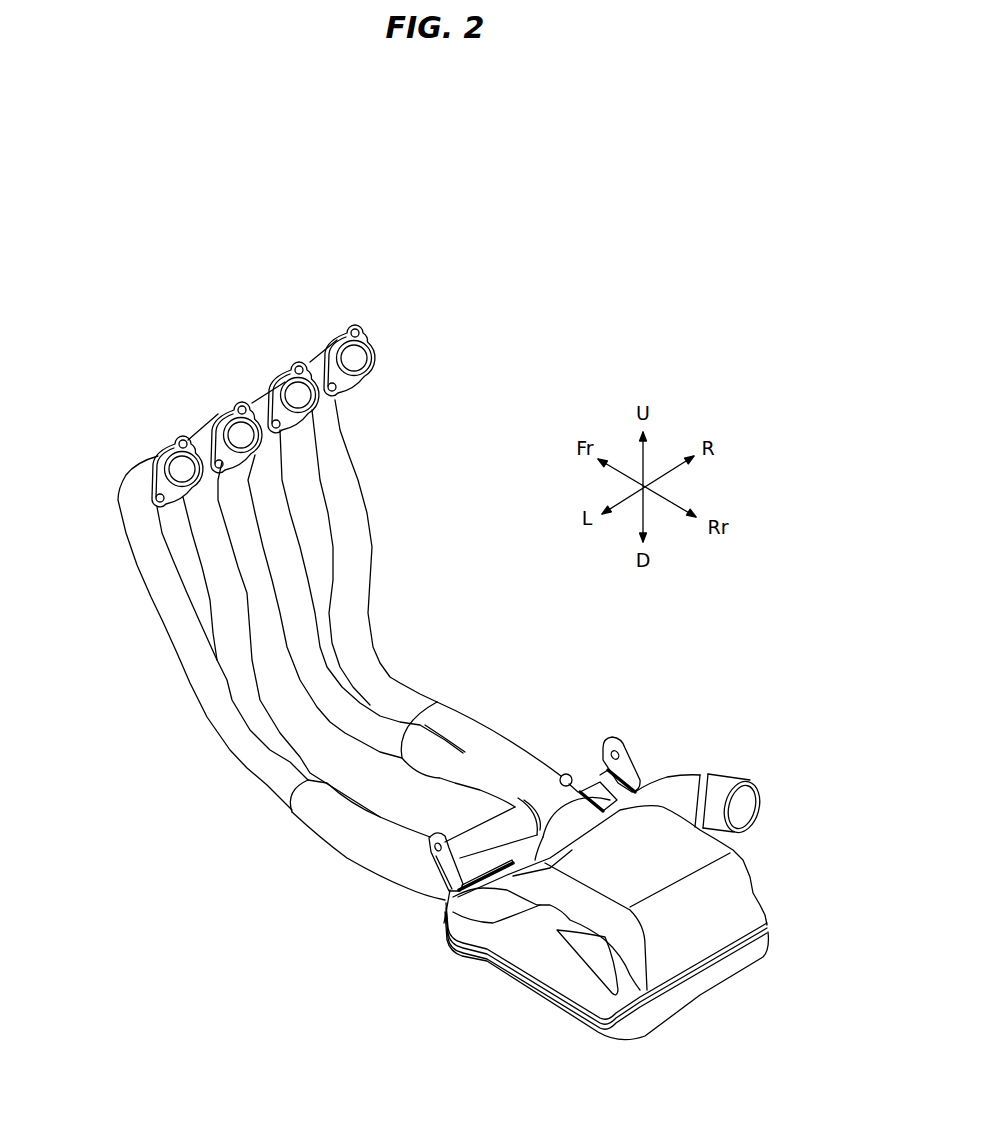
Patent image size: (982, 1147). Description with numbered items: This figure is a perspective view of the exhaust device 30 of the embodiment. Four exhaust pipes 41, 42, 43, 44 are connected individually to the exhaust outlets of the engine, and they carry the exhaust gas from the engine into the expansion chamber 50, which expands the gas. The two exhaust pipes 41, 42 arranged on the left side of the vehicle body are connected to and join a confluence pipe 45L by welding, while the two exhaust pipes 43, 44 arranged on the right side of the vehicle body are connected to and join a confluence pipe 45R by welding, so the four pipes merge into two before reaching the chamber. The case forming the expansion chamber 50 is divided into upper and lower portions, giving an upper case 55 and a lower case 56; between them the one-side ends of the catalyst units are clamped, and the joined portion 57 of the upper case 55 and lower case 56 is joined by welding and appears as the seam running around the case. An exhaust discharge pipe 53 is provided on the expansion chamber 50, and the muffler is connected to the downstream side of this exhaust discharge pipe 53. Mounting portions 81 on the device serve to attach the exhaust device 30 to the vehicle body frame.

The exhaust device 30 is at (635, 683).
The exhaust pipe 41 is at (120, 488).
The exhaust pipe 42 is at (210, 547).
The exhaust pipe 43 is at (280, 500).
The exhaust pipe 44 is at (347, 433).
The confluence pipe 45L is at (333, 845).
The confluence pipe 45R is at (497, 730).
The expansion chamber 50 is at (644, 910).
The exhaust discharge pipe 53 is at (747, 783).
The upper case 55 is at (747, 860).
The lower case 56 is at (740, 965).
The joined portion 57 is at (533, 983).
The mounting portion 81 is at (438, 872).